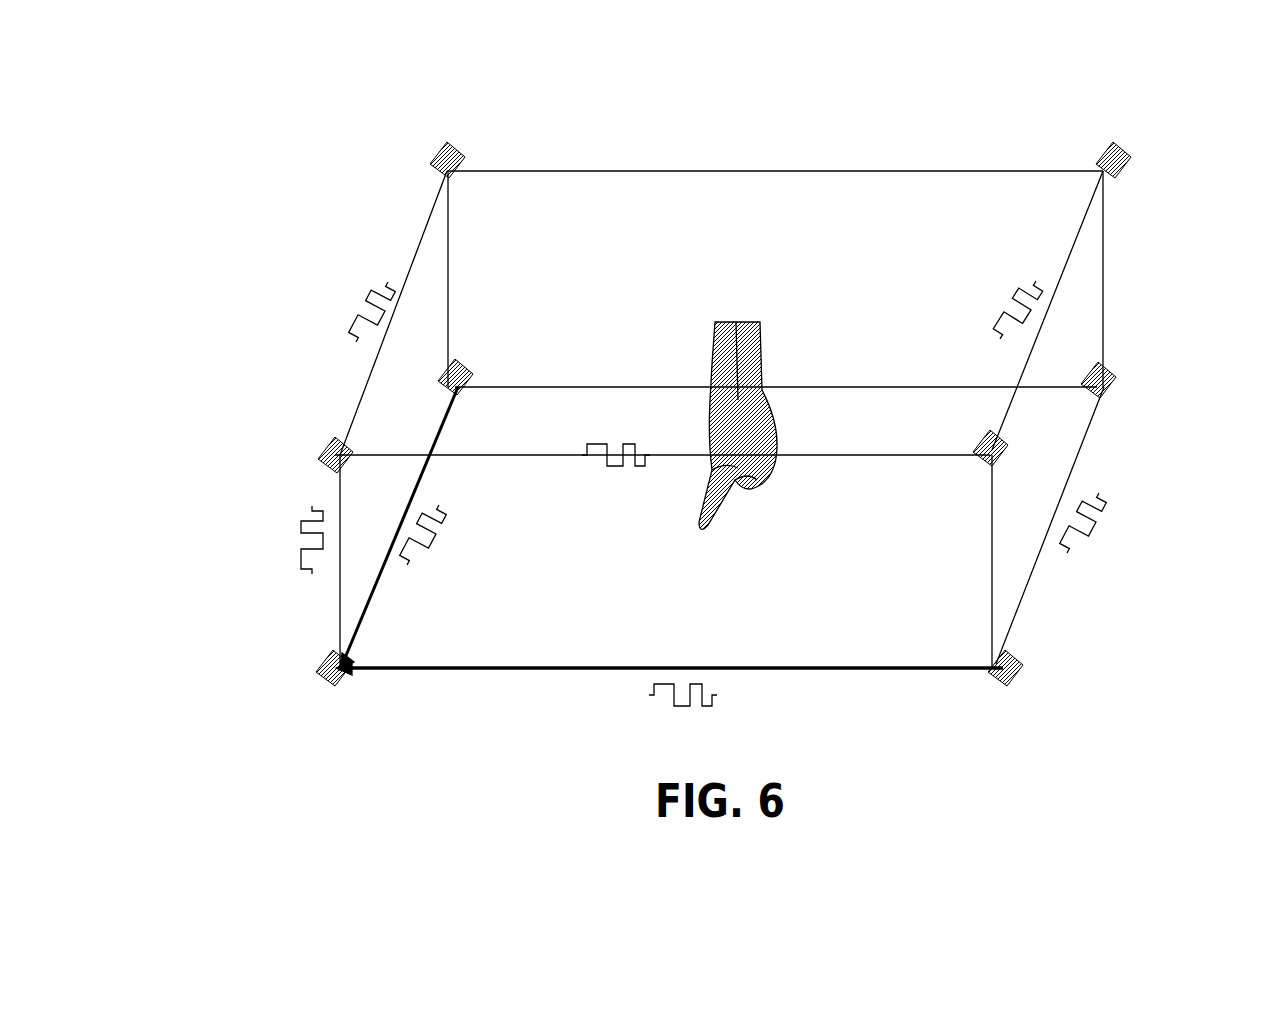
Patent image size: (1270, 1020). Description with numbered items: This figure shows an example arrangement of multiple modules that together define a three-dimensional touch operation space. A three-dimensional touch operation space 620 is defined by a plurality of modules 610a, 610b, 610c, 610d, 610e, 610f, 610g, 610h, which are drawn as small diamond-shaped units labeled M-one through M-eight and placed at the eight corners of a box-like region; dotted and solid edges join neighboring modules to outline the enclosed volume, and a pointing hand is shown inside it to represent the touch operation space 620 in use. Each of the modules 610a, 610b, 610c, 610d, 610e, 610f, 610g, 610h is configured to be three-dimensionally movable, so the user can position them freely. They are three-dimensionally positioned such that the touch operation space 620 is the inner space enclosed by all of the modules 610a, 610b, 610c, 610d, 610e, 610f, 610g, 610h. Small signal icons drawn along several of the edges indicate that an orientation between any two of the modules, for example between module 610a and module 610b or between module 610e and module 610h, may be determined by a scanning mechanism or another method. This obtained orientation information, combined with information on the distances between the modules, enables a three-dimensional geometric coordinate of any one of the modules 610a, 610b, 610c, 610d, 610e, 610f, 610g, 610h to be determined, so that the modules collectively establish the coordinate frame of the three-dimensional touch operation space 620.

The module 610a is at (335, 683).
The module 610b is at (1000, 683).
The module 610c is at (1112, 393).
The module 610d is at (465, 358).
The module 610e is at (328, 455).
The module 610f is at (970, 462).
The module 610g is at (1120, 165).
The module 610h is at (445, 160).
The 3D touch operation space 620 is at (641, 312).